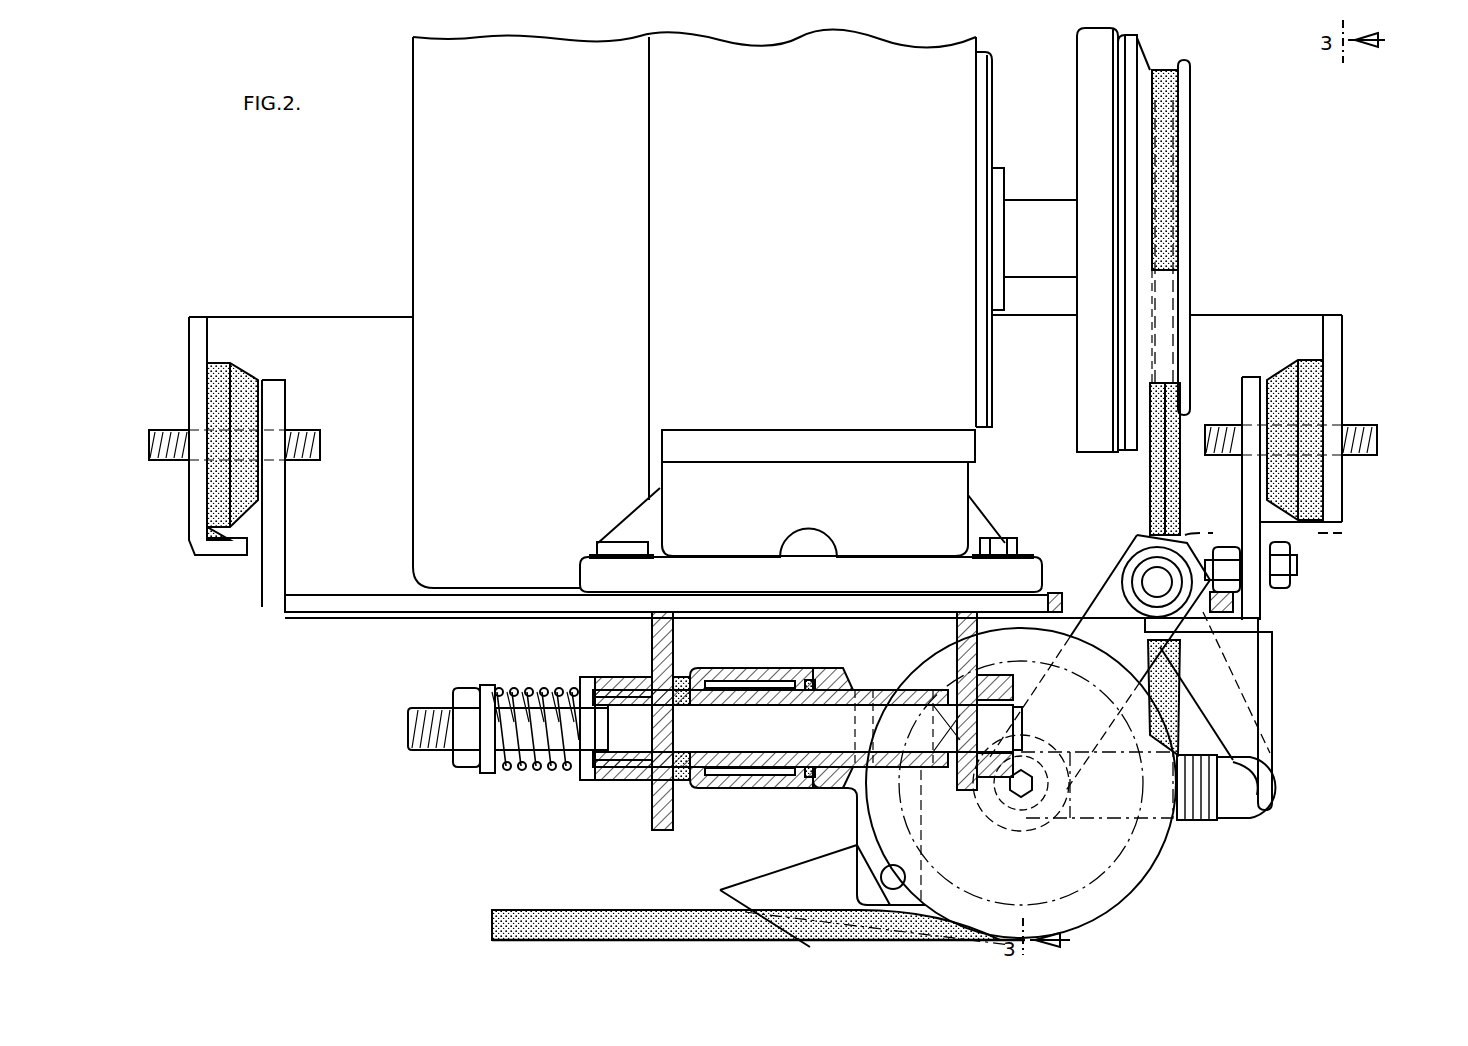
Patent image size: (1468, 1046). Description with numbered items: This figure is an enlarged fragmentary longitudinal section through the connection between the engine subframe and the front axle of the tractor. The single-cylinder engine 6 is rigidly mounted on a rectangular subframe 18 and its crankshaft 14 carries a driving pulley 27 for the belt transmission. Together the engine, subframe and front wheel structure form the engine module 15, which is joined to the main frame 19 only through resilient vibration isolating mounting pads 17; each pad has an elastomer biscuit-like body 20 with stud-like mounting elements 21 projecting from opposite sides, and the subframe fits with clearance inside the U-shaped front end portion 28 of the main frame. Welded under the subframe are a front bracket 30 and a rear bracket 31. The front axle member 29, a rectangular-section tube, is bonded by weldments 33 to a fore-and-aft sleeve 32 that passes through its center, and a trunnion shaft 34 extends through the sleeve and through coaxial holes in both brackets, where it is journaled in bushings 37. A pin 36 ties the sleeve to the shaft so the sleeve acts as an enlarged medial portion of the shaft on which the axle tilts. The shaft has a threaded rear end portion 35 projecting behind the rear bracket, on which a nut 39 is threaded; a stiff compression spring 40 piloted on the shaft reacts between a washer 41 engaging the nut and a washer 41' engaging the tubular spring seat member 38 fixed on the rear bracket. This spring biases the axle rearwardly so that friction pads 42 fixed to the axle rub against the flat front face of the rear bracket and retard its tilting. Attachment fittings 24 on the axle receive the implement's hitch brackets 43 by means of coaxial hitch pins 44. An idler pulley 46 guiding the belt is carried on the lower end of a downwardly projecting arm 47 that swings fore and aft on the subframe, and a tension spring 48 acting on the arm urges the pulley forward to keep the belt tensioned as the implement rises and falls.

The engine 6 is at (813, 214).
The crankshaft 14 is at (1043, 205).
The driving pulley 27 is at (1190, 200).
The main frame 19 is at (1342, 325).
The vibration isolating mounting pads 17 is at (243, 374).
The biscuit-like body 20 is at (220, 480).
The stud-like mounting elements 21 is at (171, 430).
The U-shaped front end portion 28 is at (1342, 495).
The subframe 18 is at (378, 596).
The engine module 15 is at (343, 622).
The rear bracket 31 is at (652, 631).
The front bracket 30 is at (957, 633).
The friction pads 42 is at (680, 790).
The tubular spring seat member 38 is at (632, 677).
The trunnion shaft 34 is at (792, 739).
The bushings 37 is at (650, 710).
The pin 36 is at (860, 690).
The sleeve 32 is at (925, 690).
The front axle member 29 is at (757, 668).
The weldments 33 is at (683, 678).
The threaded rear end portion 35 is at (420, 722).
The nut 39 is at (468, 690).
The washer 41 is at (476, 706).
The washer 41' is at (567, 710).
The compression spring 40 is at (527, 690).
The attachment fittings 24 is at (862, 832).
The hitch pins 44 is at (880, 878).
The hitch brackets 43 is at (800, 876).
The idler pulley 46 is at (1148, 868).
The arm 47 is at (1125, 643).
The tension spring 48 is at (1200, 822).